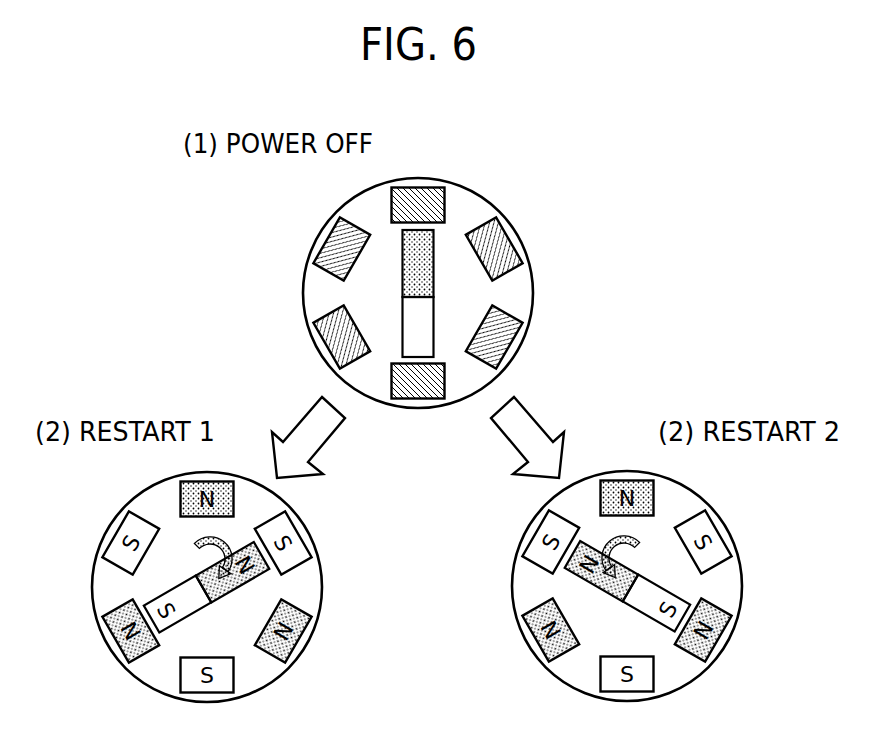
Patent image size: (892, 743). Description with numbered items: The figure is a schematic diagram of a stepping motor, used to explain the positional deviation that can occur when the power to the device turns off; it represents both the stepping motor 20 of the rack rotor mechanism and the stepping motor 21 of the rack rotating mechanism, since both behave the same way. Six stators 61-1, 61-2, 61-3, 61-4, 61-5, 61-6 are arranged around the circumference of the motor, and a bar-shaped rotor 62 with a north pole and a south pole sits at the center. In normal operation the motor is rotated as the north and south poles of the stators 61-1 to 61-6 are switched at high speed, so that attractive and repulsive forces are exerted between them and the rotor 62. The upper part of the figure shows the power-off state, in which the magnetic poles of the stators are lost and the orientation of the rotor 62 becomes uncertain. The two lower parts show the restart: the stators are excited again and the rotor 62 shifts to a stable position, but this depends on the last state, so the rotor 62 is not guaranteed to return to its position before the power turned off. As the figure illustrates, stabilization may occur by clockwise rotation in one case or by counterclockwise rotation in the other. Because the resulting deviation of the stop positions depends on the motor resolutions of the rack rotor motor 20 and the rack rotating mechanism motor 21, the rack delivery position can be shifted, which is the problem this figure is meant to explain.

The stepping motor 20 is at (459, 270).
The stepping motor 21 is at (418, 293).
The stator 61-1 is at (443, 169).
The stator 61-2 is at (539, 233).
The stator 61-3 is at (541, 336).
The stator 61-4 is at (400, 415).
The stator 61-5 is at (300, 355).
The stator 61-6 is at (295, 239).
The rotor 62 is at (519, 293).